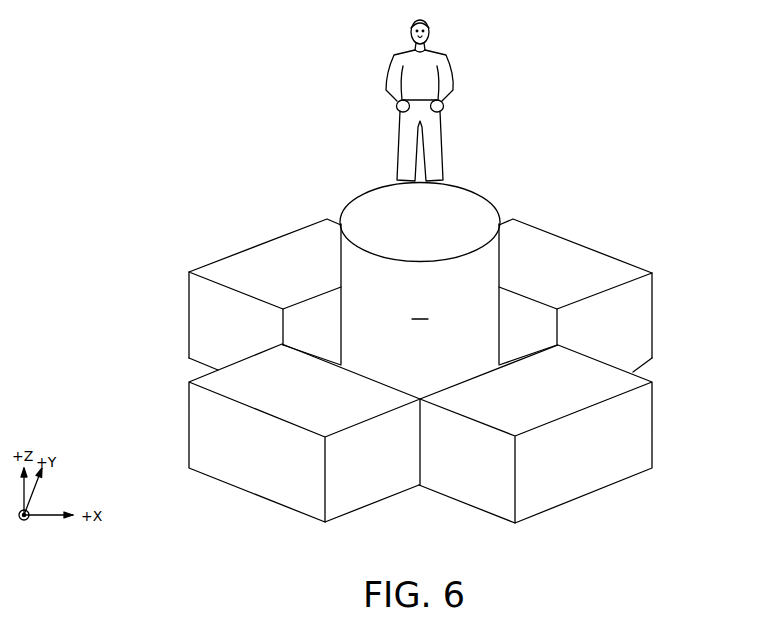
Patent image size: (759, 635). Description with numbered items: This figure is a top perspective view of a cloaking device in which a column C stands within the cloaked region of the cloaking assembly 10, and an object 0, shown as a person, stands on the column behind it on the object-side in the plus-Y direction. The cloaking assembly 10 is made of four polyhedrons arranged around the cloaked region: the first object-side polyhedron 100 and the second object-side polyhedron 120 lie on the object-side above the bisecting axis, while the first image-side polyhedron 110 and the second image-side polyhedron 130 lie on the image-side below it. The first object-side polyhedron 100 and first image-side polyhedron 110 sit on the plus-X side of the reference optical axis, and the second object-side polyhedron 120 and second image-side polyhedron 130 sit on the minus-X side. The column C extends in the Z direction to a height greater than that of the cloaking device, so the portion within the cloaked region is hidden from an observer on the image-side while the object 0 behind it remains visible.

The operator 0 is at (455, 100).
The cloaking assembly 10 is at (526, 230).
The first object-side polyhedron 100 is at (575, 265).
The first image-side polyhedron 110 is at (535, 469).
The second object-side polyhedron 120 is at (265, 263).
The second image-side polyhedron 130 is at (304, 467).